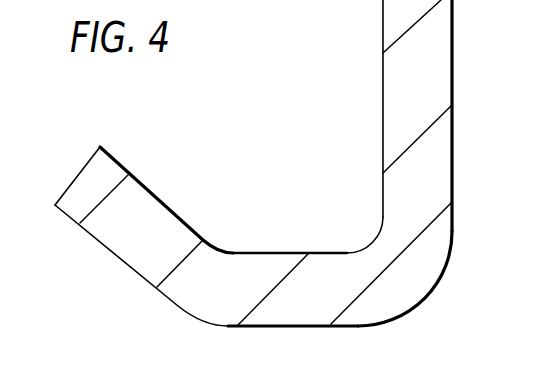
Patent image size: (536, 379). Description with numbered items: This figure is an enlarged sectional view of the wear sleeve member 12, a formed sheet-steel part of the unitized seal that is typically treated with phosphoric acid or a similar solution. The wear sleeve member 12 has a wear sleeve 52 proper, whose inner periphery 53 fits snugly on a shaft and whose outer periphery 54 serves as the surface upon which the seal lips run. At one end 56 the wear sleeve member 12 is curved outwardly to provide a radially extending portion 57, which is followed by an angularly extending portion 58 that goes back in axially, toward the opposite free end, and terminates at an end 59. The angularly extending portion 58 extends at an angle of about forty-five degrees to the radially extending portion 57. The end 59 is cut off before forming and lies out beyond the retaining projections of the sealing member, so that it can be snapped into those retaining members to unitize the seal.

The wear sleeve member 12 is at (262, 163).
The wear sleeve 52 is at (410, 115).
The inner periphery 53 is at (452, 50).
The outer periphery 54 is at (383, 13).
The end 56 is at (437, 276).
The radially extending portion 57 is at (298, 238).
The angularly extending portion 58 is at (147, 203).
The end 59 is at (82, 175).